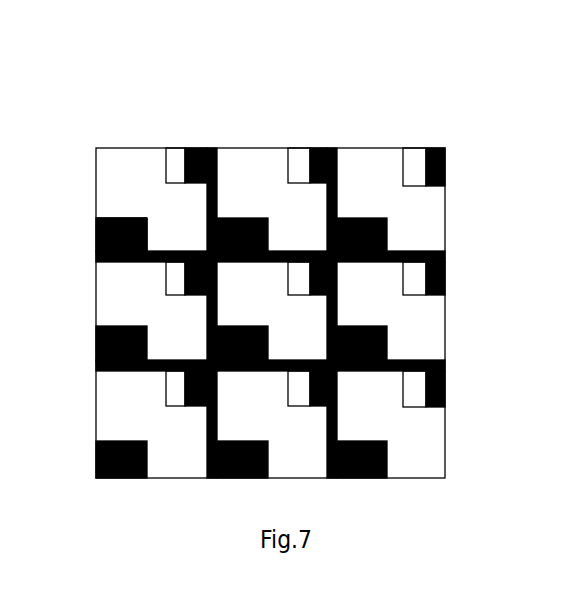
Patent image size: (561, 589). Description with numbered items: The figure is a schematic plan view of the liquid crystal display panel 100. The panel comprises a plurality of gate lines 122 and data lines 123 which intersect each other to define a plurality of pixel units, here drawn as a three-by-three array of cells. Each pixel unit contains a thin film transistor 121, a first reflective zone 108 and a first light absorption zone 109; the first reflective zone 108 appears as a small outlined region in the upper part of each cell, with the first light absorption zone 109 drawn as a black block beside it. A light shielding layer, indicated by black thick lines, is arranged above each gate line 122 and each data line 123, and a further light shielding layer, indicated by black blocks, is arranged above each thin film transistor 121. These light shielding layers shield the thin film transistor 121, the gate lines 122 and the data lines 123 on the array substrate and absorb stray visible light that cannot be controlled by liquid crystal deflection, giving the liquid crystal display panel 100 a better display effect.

The liquid crystal display panel 100 is at (303, 59).
The first reflective zone 108 is at (179, 157).
The first light absorption zone 109 is at (211, 153).
The thin film transistor 121 is at (96, 237).
The gate line 122 is at (442, 250).
The data line 123 is at (337, 168).